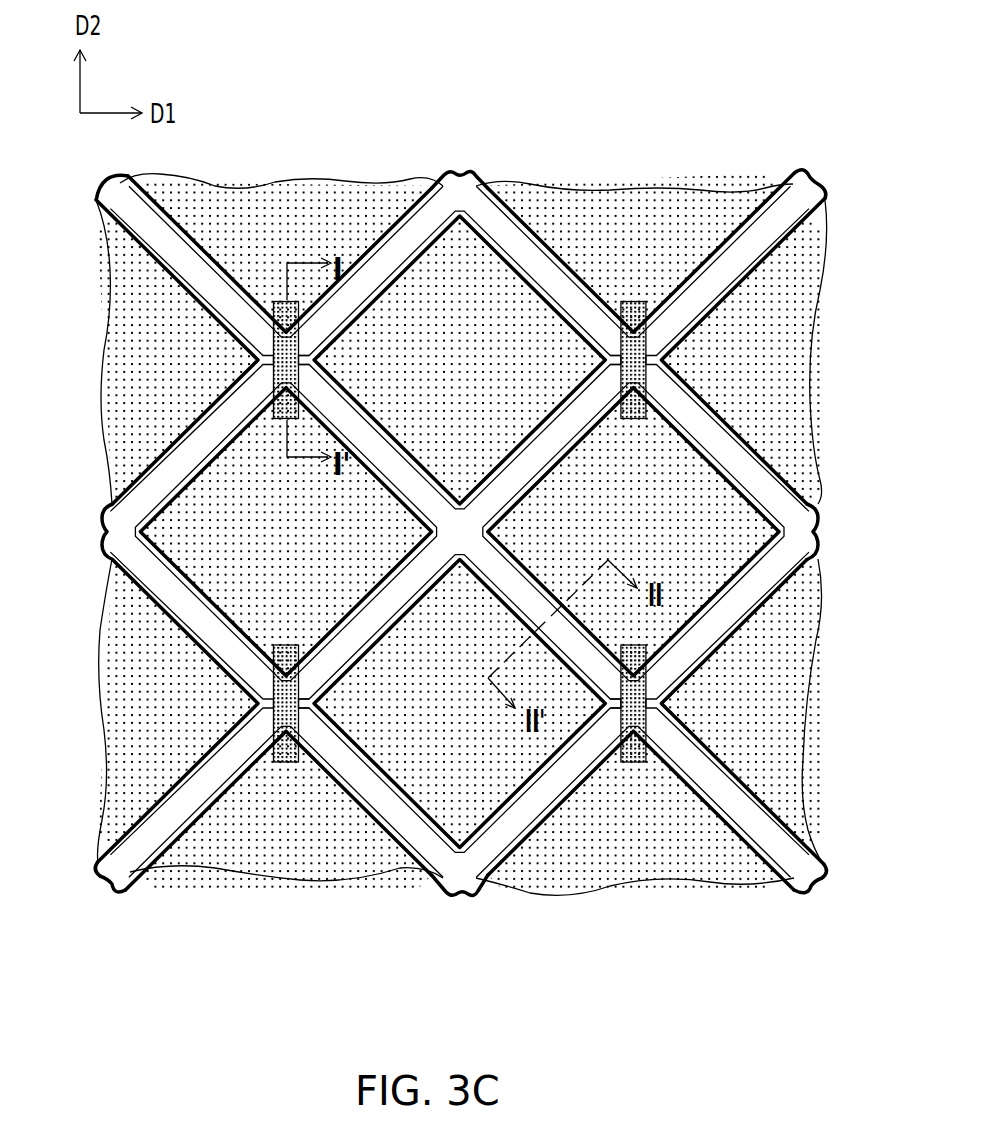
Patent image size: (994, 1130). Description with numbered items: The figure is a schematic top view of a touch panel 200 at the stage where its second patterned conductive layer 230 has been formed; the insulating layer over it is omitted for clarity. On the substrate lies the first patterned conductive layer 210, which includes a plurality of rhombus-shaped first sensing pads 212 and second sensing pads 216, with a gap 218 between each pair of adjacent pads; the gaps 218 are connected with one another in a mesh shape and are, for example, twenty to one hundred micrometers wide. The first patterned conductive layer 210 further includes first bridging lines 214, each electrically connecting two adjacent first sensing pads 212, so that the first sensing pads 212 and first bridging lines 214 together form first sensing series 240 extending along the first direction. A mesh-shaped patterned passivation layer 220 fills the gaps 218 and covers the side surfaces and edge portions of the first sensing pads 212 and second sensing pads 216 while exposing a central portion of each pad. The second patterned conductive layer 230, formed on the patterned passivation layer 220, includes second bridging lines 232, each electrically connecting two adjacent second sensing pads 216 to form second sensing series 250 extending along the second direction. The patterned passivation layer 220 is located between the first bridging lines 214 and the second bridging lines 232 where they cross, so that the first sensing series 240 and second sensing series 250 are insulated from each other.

The touch panel 200 is at (756, 982).
The first patterned conductive layer 210 is at (131, 938).
The first sensing pads 212 is at (140, 397).
The first bridging lines 214 is at (318, 360).
The second sensing pads 216 is at (168, 202).
The gap 218 is at (540, 265).
The patterned passivation layer 220 is at (797, 170).
The second patterned conductive layer 230 is at (439, 493).
The second bridging lines 232 is at (282, 300).
The first sensing series 240 is at (289, 48).
The second sensing series 250 is at (686, 5).